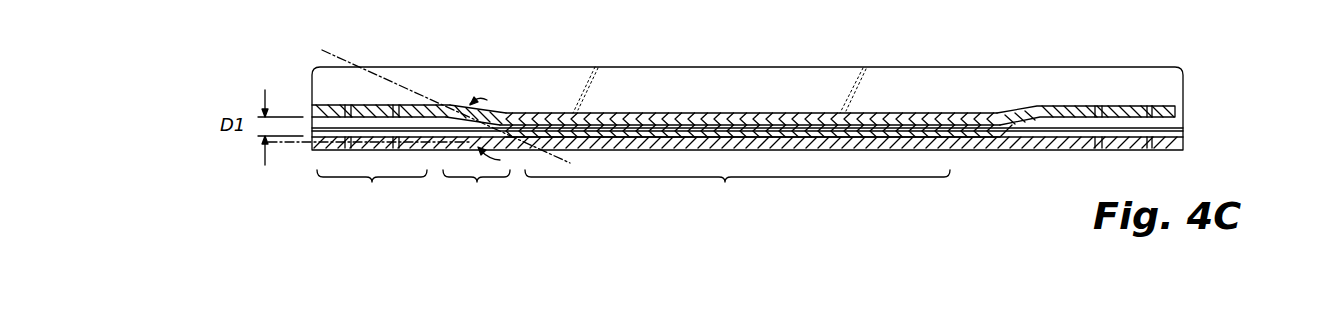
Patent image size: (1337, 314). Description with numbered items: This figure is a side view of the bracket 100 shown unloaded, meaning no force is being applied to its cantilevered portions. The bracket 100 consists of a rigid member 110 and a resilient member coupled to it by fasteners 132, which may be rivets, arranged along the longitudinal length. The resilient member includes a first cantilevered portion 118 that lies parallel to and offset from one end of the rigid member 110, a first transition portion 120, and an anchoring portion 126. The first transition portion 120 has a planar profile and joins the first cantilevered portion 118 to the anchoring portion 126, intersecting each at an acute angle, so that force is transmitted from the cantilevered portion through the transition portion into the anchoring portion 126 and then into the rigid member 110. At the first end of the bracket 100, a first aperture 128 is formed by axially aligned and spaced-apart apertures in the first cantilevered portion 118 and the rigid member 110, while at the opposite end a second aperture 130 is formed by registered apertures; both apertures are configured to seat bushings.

The bracket 100 is at (483, 58).
The rigid member 110 is at (660, 76).
The first cantilevered portion 118 is at (366, 185).
The first transition portion 120 is at (477, 185).
The anchoring portion 126 is at (726, 185).
The first aperture 128 is at (357, 111).
The second aperture 130 is at (1125, 109).
The fasteners 132 is at (546, 116).